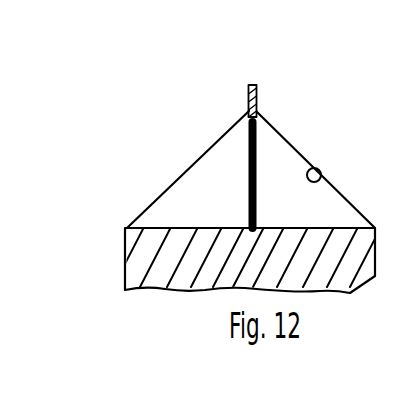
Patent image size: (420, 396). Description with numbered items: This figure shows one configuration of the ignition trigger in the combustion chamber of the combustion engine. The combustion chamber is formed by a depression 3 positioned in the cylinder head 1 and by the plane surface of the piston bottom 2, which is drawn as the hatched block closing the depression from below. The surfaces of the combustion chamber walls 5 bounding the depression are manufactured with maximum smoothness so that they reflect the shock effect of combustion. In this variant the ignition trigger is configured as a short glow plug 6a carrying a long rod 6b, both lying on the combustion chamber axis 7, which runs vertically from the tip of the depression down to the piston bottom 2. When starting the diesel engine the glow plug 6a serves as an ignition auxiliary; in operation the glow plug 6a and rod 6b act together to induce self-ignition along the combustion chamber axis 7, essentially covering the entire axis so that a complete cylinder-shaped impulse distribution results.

The cylinder head 1 is at (178, 178).
The piston bottom 2 is at (143, 250).
The depression 3 is at (217, 205).
The combustion chamber wall 5 is at (321, 171).
The glow plug 6a is at (258, 105).
The rod 6b is at (248, 167).
The combustion chamber axis 7 is at (258, 150).